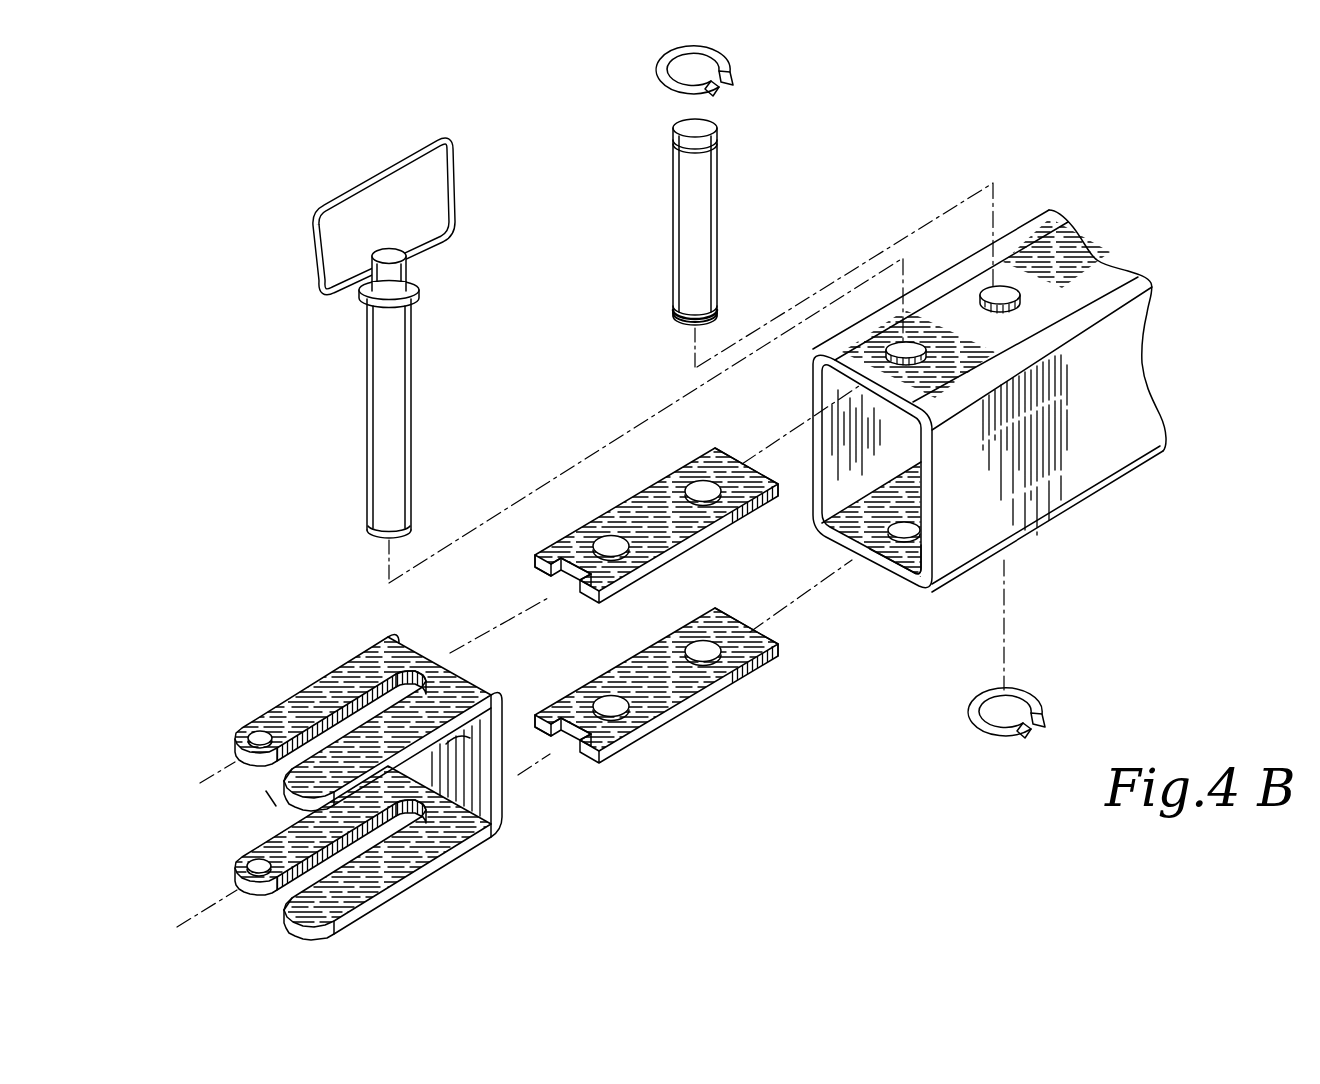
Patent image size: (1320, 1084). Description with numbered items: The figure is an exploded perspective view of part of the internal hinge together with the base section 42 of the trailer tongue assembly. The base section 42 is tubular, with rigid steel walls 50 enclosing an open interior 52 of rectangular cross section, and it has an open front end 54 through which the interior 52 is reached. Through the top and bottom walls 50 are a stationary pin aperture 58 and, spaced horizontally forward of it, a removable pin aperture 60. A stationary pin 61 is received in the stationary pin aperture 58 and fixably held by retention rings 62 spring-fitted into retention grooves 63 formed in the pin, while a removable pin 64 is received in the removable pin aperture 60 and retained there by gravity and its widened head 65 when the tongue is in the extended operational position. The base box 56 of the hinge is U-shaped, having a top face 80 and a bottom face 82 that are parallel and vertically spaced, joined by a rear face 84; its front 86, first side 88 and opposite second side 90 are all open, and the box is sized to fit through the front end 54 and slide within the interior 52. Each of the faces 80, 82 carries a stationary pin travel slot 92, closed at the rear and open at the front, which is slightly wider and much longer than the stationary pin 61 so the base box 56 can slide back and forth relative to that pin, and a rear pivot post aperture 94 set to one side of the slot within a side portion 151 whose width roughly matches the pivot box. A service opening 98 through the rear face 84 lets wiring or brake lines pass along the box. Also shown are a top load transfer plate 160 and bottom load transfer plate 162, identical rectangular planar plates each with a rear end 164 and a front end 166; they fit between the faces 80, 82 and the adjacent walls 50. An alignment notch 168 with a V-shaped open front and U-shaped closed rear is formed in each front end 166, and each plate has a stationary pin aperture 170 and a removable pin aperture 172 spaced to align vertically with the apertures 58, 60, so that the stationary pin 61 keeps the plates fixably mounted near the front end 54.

The base section 42 is at (1023, 508).
The walls 50 is at (1090, 465).
The open interior 52 is at (893, 455).
The open front end 54 is at (943, 547).
The base box 56 is at (335, 683).
The stationary pin aperture 58 is at (1002, 290).
The removable pin aperture 60 is at (908, 342).
The stationary pin 61 is at (698, 200).
The retention rings 62 is at (660, 72).
The retention grooves 63 is at (714, 136).
The removable pin 64 is at (392, 380).
The widened head 65 is at (413, 282).
The top face 80 is at (384, 652).
The bottom face 82 is at (397, 888).
The rear face 84 is at (499, 775).
The front 86 is at (274, 822).
The first side 88 is at (290, 907).
The second side 90 is at (270, 800).
The stationary pin travel slot 92 is at (268, 782).
The rear pivot post aperture 94 is at (258, 737).
The service opening 98 is at (452, 744).
The side portion 151 is at (272, 708).
The top load transfer plate 160 is at (637, 497).
The bottom load transfer plate 162 is at (628, 667).
The rear end 164 is at (758, 494).
The front end 166 is at (545, 567).
The alignment notch 168 is at (572, 578).
The stationary pin aperture 170 is at (701, 480).
The removable pin aperture 172 is at (605, 538).